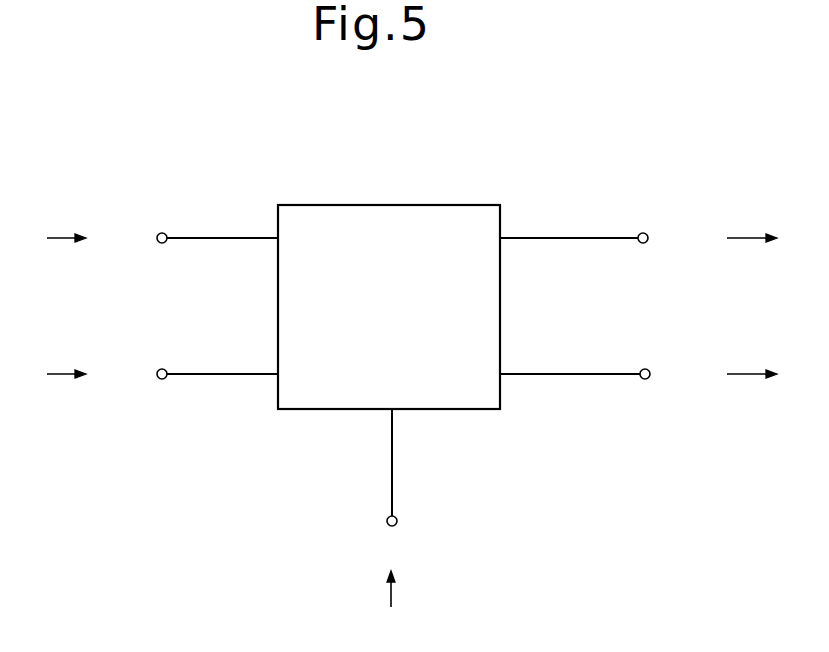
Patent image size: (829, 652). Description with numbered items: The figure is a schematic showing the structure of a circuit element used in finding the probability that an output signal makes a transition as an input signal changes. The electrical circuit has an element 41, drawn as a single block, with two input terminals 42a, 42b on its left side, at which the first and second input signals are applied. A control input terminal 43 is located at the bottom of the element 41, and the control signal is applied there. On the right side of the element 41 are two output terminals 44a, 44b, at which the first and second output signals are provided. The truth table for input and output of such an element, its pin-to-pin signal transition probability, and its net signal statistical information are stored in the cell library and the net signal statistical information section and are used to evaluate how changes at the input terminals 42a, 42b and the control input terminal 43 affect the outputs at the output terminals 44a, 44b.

The element 41 is at (427, 205).
The input terminal 42a is at (166, 233).
The input terminal 42b is at (163, 379).
The control input terminal 43 is at (425, 508).
The output terminal 44a is at (646, 233).
The output terminal 44b is at (644, 379).